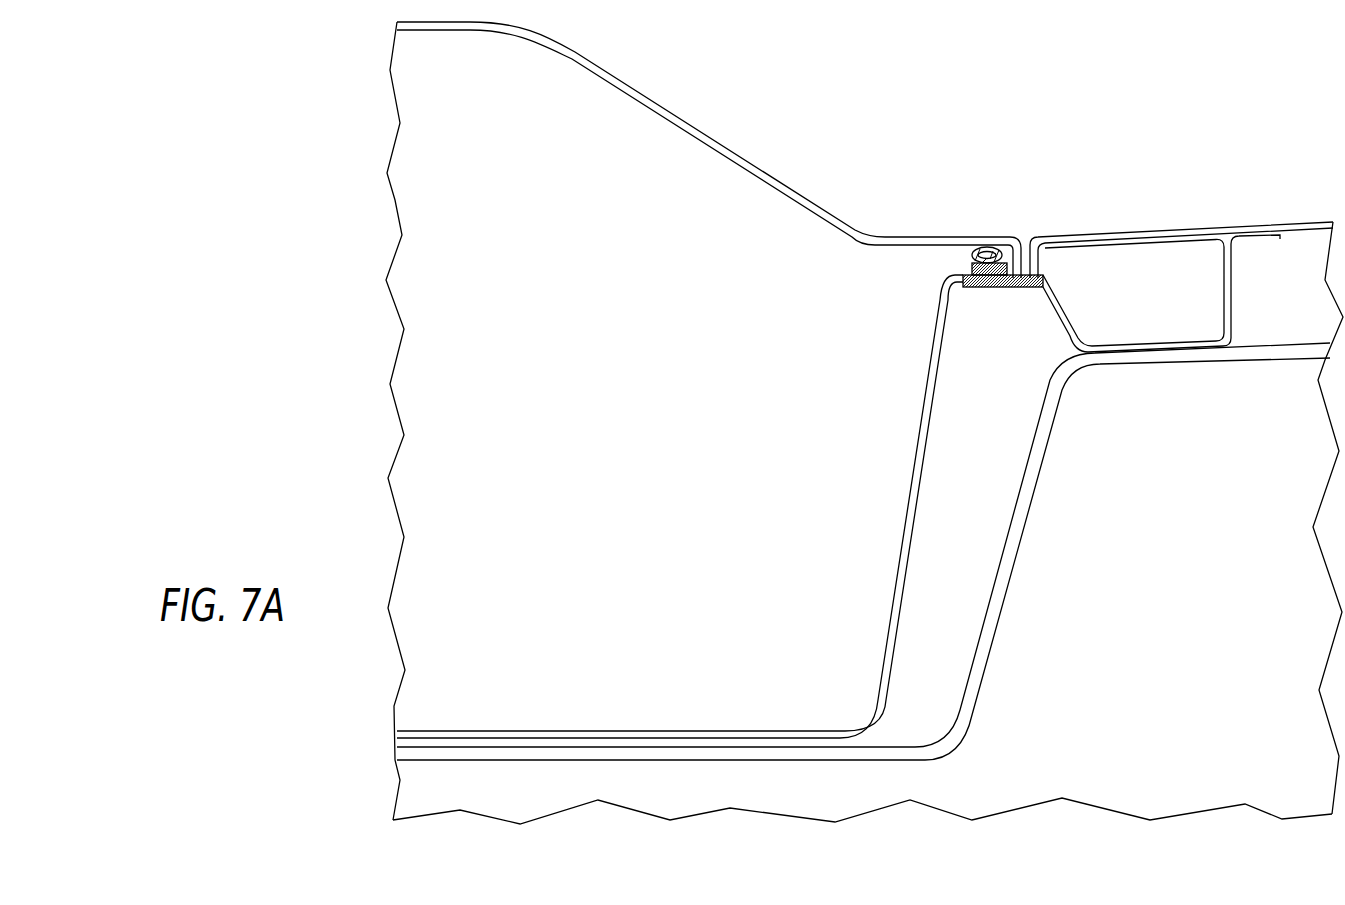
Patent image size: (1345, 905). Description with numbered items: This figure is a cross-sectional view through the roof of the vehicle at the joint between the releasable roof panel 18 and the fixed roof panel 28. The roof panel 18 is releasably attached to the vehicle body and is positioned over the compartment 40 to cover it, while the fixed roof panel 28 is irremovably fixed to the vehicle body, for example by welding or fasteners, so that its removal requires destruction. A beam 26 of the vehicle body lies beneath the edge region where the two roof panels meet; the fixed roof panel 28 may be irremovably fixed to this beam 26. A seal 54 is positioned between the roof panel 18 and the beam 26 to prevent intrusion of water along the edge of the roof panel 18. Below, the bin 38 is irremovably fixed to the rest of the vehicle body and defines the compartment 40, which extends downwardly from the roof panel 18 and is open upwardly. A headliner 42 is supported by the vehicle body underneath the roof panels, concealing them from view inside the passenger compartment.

The roof panel 18 is at (752, 163).
The fixed roof panel 28 is at (1128, 233).
The seal 54 is at (972, 258).
The beam 26 is at (1046, 312).
The bin 38 is at (920, 480).
The compartment 40 is at (444, 340).
The headliner 42 is at (1027, 512).